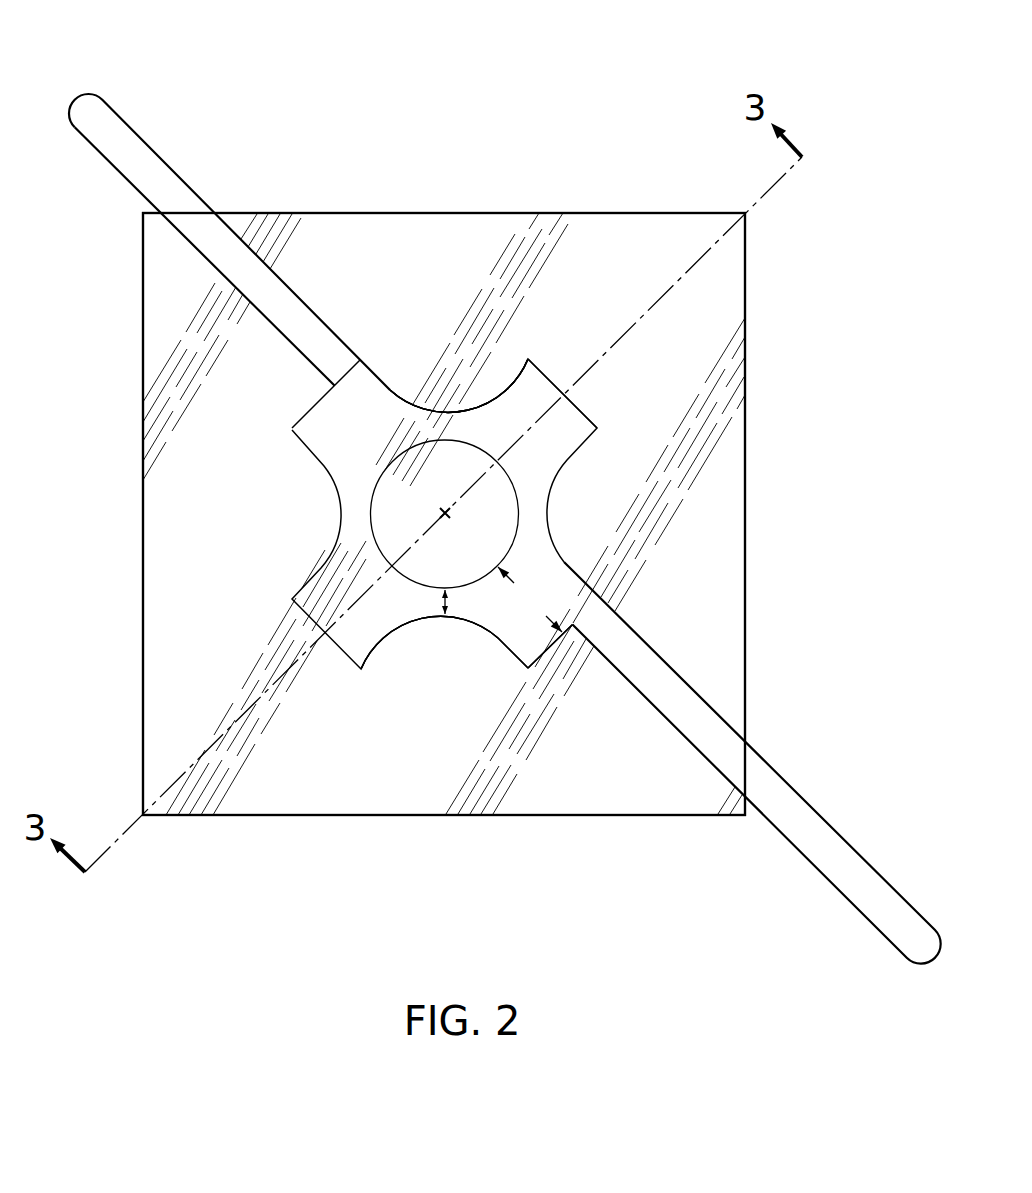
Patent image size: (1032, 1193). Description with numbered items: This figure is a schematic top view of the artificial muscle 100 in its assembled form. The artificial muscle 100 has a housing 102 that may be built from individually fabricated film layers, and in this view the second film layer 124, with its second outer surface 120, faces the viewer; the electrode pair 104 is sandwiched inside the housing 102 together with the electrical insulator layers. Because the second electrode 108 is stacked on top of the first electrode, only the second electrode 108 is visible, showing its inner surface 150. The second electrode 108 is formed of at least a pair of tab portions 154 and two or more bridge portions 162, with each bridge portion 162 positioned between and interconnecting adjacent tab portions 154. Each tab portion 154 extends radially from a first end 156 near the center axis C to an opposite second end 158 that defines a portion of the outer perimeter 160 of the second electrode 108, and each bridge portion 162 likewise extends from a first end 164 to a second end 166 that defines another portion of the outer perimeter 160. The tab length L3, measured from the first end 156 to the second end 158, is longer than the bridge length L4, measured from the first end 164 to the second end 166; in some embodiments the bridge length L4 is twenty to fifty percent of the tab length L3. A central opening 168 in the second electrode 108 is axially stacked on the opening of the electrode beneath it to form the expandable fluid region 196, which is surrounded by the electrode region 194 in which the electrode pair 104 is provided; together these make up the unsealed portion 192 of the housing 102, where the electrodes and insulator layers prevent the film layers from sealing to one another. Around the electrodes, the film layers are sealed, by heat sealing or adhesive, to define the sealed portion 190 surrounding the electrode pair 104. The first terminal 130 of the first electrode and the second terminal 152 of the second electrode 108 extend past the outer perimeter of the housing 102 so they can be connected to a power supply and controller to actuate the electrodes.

The artificial muscle 100 is at (435, 103).
The housing 102 is at (98, 408).
The electrode pair 104 is at (388, 362).
The second electrode 108 is at (294, 497).
The second outer surface 120 is at (615, 213).
The second film layer 124 is at (805, 516).
The first terminal 130 is at (117, 112).
The inner surface 150 is at (528, 365).
The second terminal 152 is at (810, 812).
The tab portions 154 is at (544, 683).
The first end 156 is at (505, 552).
The second end 158 is at (556, 644).
The outer perimeter 160 is at (580, 405).
The bridge portions 162 is at (476, 648).
The first end 164 is at (445, 588).
The second end 166 is at (437, 618).
The central opening 168 is at (412, 458).
The sealed portion 190 is at (741, 447).
The unsealed portion 192 is at (538, 471).
The electrode region 194 is at (344, 477).
The expandable fluid region 196 is at (417, 597).
The center axis C is at (446, 510).
The tab length L3 is at (530, 599).
The bridge length L4 is at (448, 603).